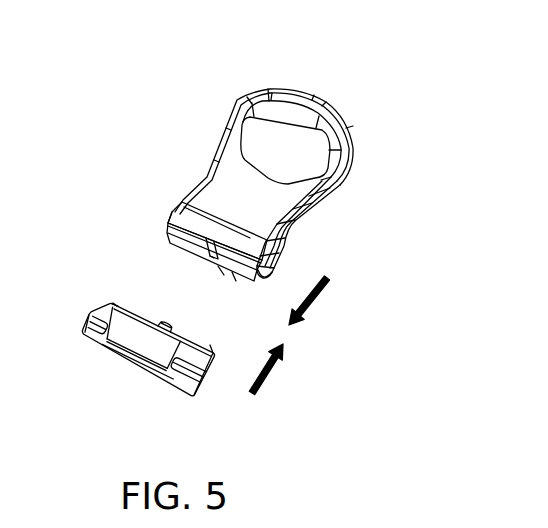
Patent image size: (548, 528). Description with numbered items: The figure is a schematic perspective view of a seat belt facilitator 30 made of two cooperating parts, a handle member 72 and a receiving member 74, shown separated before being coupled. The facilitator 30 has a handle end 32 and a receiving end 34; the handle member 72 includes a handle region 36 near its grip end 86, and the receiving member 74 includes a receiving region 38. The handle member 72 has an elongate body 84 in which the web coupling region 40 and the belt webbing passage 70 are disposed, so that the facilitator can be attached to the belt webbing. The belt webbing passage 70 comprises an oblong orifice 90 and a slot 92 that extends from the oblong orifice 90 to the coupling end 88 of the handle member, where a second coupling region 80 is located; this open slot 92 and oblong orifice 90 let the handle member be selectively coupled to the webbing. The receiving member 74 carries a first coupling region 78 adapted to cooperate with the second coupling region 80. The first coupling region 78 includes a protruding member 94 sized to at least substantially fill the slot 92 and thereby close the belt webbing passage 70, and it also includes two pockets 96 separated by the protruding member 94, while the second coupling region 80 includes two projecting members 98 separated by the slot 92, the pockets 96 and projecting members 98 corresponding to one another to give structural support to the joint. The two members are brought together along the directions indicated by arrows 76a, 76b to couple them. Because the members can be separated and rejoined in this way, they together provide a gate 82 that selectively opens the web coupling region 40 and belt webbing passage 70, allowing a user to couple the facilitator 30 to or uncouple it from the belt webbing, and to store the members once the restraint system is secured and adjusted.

The facilitator 30 is at (205, 97).
The handle end 32 is at (312, 95).
The receiving end 34 is at (142, 400).
The handle region 36 is at (360, 148).
The receiving region 38 is at (210, 400).
The web coupling region 40 is at (160, 213).
The belt webbing passage 70 is at (278, 242).
The handle member 72 is at (357, 188).
The receiving member 74 is at (62, 328).
The arrow 76a is at (312, 298).
The arrow 76b is at (266, 384).
The first coupling region 78 is at (117, 290).
The second coupling region 80 is at (236, 283).
The gate 82 is at (214, 272).
The body 84 is at (176, 209).
The grip end 86 is at (334, 103).
The coupling end 88 is at (224, 292).
The oblong orifice 90 is at (236, 236).
The slot 92 is at (213, 265).
The protruding member 94 is at (175, 314).
The pockets 96 is at (133, 300).
The projecting members 98 is at (257, 253).